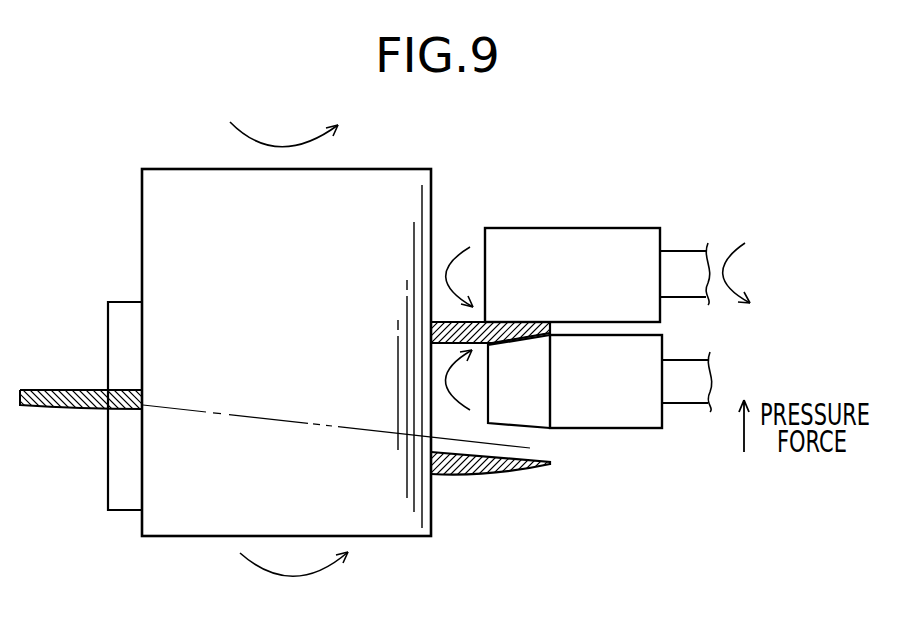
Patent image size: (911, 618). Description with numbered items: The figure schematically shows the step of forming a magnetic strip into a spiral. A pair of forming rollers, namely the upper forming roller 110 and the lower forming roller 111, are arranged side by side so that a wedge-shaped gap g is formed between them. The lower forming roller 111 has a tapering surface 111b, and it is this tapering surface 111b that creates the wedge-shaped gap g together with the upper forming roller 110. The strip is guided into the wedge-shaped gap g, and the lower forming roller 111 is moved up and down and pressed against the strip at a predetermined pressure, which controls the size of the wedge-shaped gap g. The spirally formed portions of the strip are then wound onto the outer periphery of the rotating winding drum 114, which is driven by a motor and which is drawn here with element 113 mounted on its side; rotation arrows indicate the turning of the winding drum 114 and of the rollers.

The winding drum 114 is at (173, 193).
The lens 113 is at (122, 313).
The upper forming roller 110 is at (580, 252).
The lower forming roller 111 is at (628, 415).
The tapering surface 111b is at (540, 432).
The wedge-shaped gap g is at (530, 322).